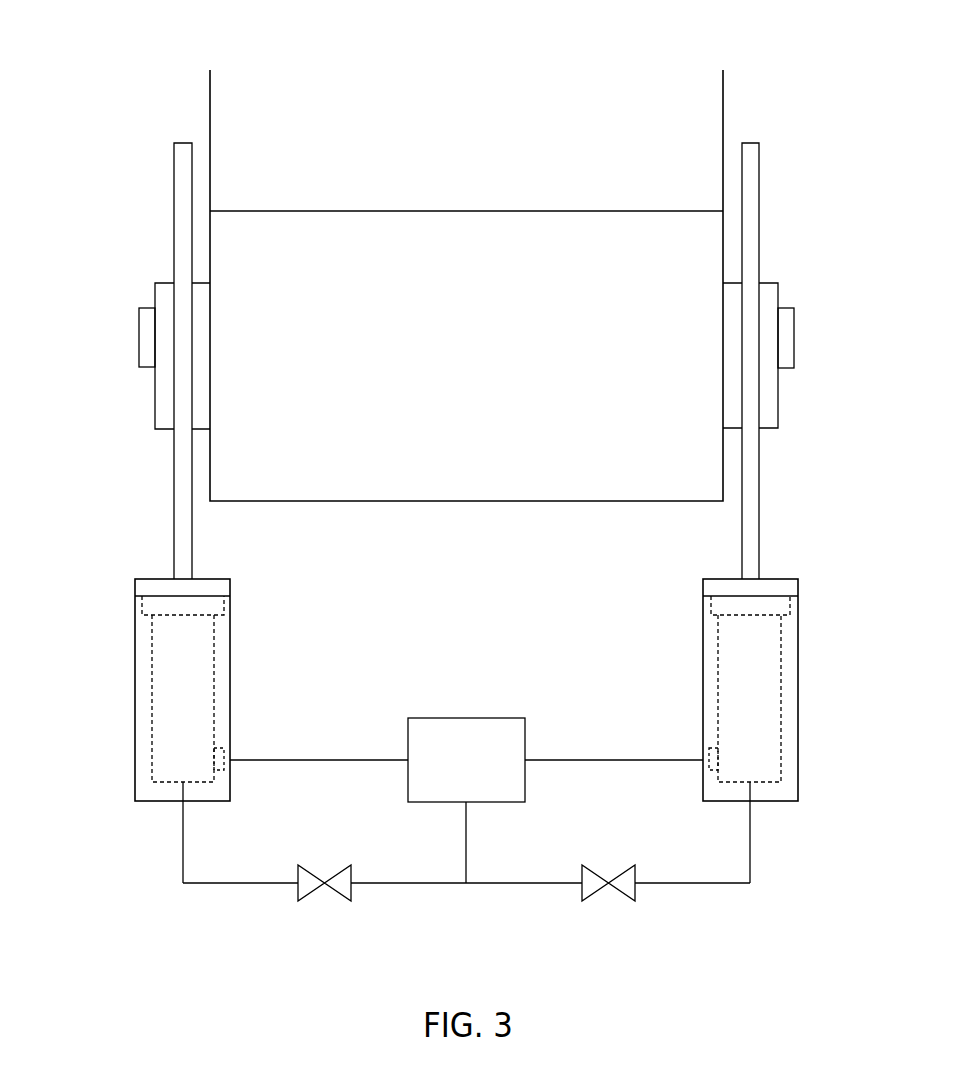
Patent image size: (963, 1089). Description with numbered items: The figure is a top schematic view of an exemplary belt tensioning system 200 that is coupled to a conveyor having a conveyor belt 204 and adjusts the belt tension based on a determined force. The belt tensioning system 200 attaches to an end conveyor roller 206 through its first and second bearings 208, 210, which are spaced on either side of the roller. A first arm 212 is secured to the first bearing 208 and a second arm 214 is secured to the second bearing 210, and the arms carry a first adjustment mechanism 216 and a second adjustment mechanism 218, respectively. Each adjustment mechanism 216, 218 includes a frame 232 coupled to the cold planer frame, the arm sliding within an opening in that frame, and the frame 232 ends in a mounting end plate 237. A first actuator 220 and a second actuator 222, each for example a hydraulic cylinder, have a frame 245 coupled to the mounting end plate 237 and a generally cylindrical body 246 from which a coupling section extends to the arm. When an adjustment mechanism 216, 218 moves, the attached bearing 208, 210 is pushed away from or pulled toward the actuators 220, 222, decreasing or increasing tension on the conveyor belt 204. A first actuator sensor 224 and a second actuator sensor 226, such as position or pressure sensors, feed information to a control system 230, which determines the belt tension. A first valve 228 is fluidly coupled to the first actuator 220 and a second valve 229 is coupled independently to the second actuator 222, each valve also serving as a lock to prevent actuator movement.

The belt tensioning system 200 is at (134, 80).
The conveyor belt 204 is at (703, 110).
The end conveyor roller 206 is at (442, 230).
The first bearing 208 is at (139, 340).
The second bearing 210 is at (795, 337).
The first arm 212 is at (155, 388).
The second arm 214 is at (730, 357).
The first adjustment mechanism 216 is at (166, 509).
The second adjustment mechanism 218 is at (768, 509).
The first actuator 220 is at (468, 722).
The second actuator 222 is at (690, 785).
The first actuator sensor 224 is at (218, 748).
The second actuator sensor 226 is at (713, 748).
The first valve 228 is at (333, 898).
The second valve 229 is at (616, 898).
The control system 230 is at (465, 718).
The frame 232 is at (174, 470).
The mounting end plate 237 is at (160, 590).
The frame 245 is at (135, 640).
The body 246 is at (195, 665).